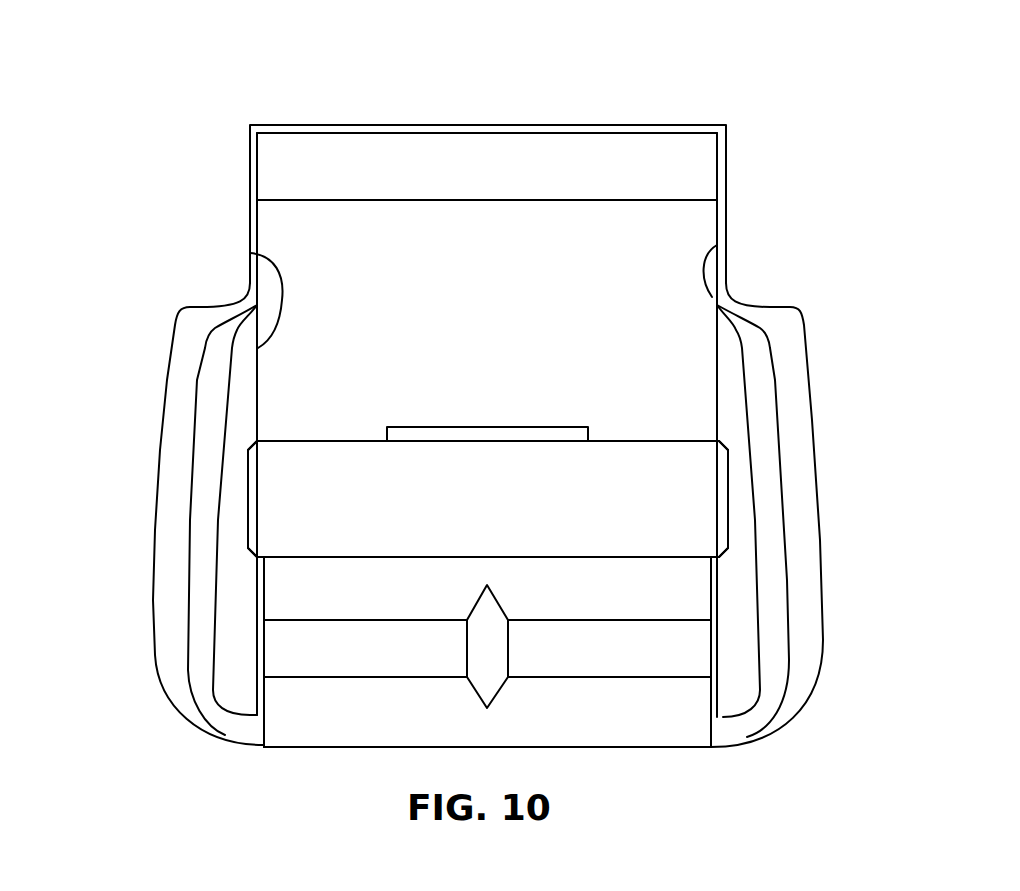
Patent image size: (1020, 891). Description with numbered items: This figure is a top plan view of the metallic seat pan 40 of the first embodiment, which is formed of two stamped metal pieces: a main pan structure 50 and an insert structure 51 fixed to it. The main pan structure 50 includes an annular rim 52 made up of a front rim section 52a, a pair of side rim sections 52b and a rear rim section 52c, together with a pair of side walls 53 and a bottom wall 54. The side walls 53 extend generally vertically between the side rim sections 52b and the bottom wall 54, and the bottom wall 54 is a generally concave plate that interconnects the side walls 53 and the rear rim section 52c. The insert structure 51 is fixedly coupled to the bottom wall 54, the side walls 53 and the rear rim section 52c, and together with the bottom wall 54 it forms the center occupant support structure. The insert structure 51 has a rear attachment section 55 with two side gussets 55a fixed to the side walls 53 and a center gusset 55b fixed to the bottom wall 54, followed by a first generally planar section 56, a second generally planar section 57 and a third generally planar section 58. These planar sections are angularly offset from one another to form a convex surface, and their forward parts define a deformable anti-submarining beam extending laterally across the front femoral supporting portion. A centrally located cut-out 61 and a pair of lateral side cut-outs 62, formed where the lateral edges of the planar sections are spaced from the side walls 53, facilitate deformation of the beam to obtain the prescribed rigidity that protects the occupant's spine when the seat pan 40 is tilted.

The metallic seat pan 40 is at (178, 86).
The main pan structure 50 is at (154, 515).
The insert structure 51 is at (318, 748).
The annular rim 52 is at (197, 432).
The front rim section 52a is at (722, 745).
The side rim sections 52b is at (167, 605).
The rear rim section 52c is at (500, 128).
The side walls 53 is at (250, 253).
The bottom wall 54 is at (535, 291).
The rear attachment section 55 is at (353, 452).
The side gussets 55a is at (255, 520).
The center gusset 55b is at (528, 426).
The first generally planar section 56 is at (378, 578).
The second generally planar section 57 is at (410, 640).
The third generally planar section 58 is at (557, 717).
The centrally located cut-out 61 is at (497, 661).
The lateral side cut-outs 62 is at (262, 660).